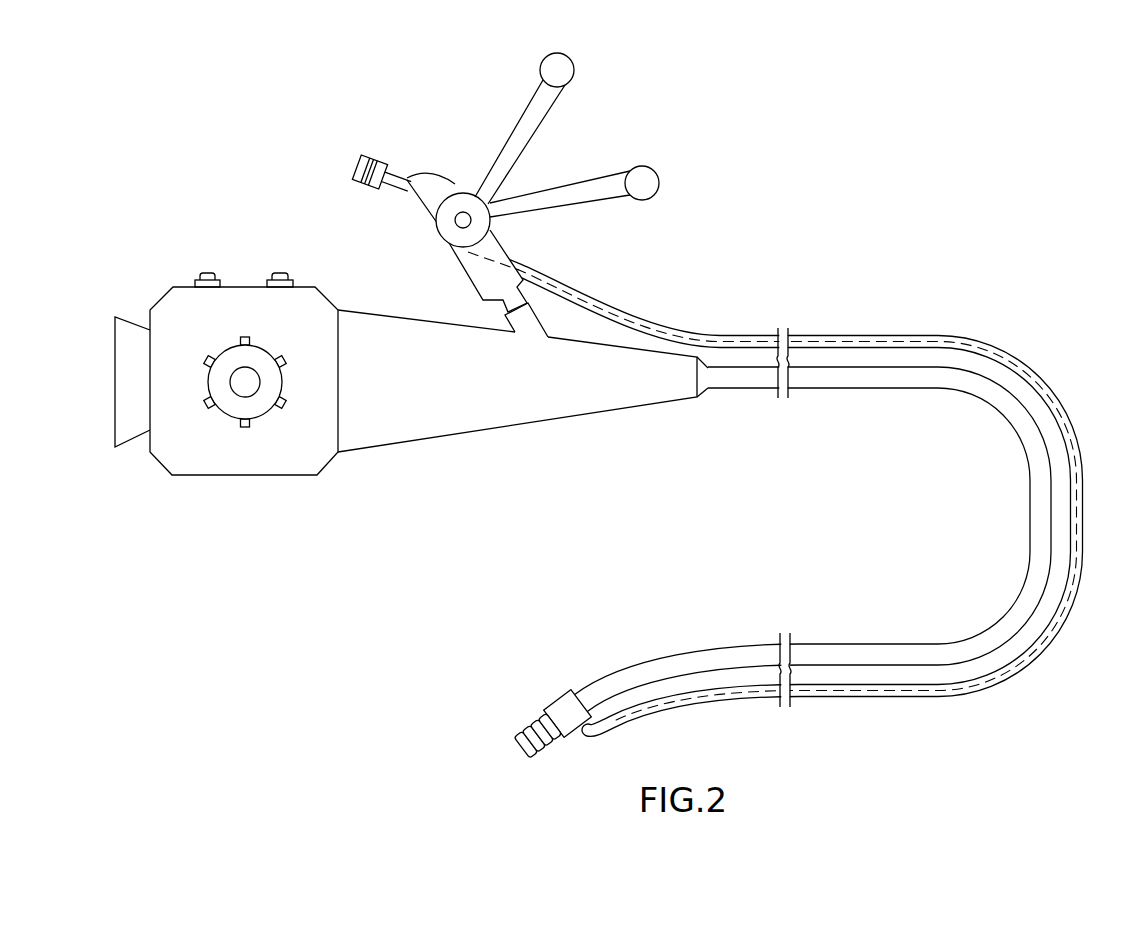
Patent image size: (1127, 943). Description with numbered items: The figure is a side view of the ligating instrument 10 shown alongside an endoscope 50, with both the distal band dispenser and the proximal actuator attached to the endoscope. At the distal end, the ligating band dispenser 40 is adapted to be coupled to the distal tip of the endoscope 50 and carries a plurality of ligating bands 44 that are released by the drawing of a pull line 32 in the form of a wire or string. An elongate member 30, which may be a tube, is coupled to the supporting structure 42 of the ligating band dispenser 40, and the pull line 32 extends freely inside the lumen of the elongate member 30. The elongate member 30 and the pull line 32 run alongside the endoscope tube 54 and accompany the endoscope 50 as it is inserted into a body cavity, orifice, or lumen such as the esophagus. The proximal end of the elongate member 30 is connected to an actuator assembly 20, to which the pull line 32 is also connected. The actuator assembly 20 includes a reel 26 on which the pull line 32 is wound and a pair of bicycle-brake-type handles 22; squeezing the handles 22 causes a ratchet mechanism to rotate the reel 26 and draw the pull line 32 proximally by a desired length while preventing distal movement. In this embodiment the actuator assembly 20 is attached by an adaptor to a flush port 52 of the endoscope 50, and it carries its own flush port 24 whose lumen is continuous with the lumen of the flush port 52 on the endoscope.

The ligating instrument 10 is at (596, 434).
The actuator assembly 20 is at (502, 181).
The handles 22 is at (558, 100).
The flush port 24 is at (367, 153).
The reel 26 is at (452, 241).
The elongate member 30 is at (843, 335).
The pull line 32 is at (968, 338).
The ligating band dispenser 40 is at (506, 712).
The supporting structure 42 is at (562, 688).
The ligating bands 44 is at (530, 722).
The endoscope 50 is at (408, 495).
The flush port 52 is at (505, 323).
The endoscope tube 54 is at (985, 625).